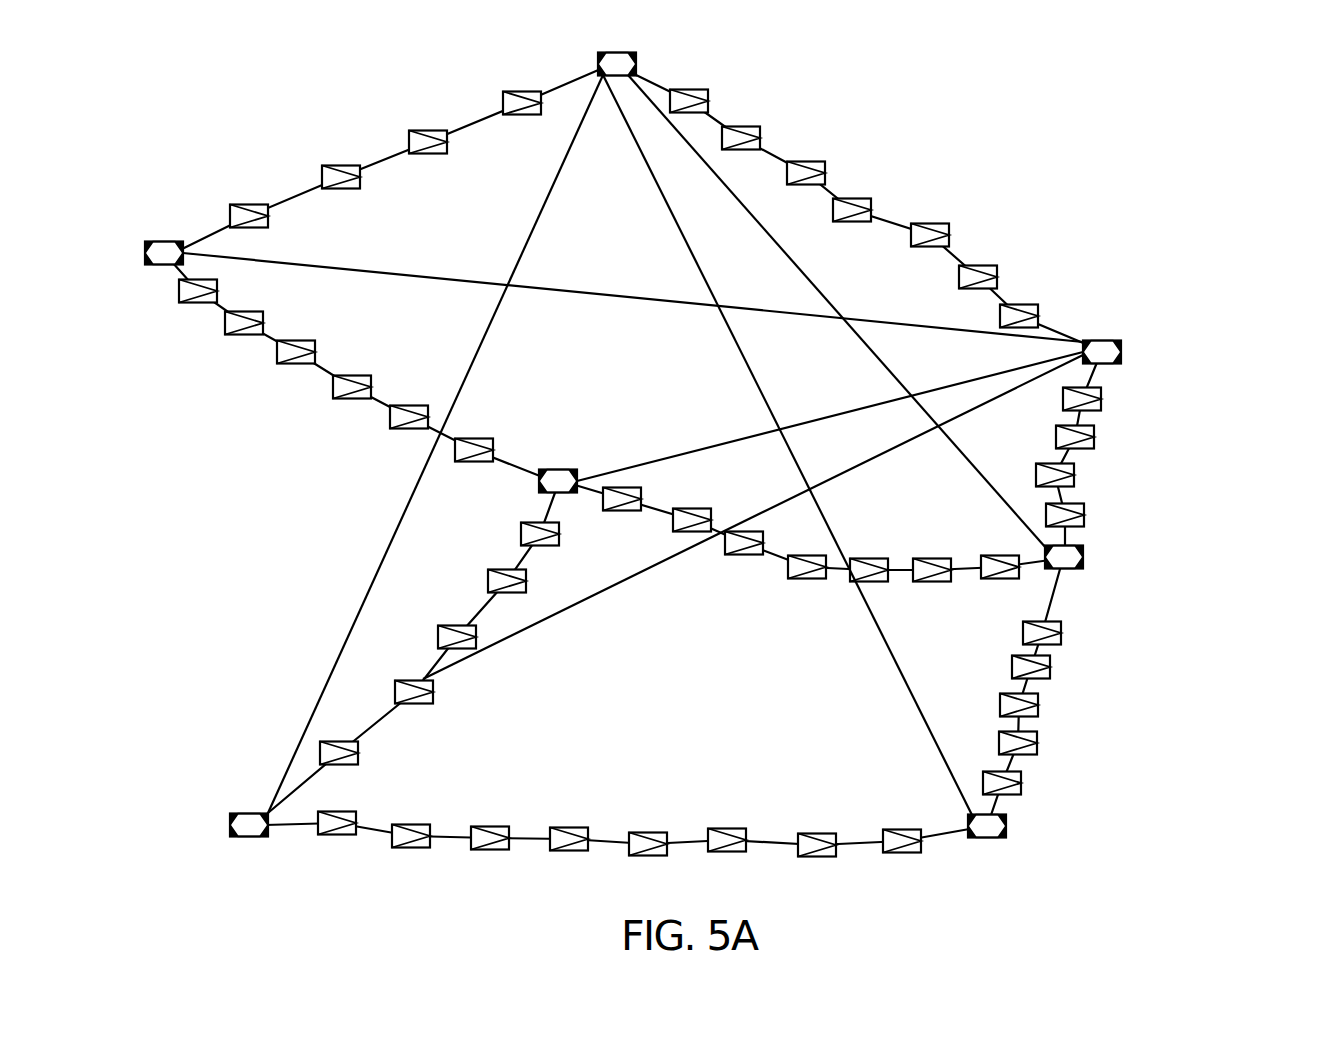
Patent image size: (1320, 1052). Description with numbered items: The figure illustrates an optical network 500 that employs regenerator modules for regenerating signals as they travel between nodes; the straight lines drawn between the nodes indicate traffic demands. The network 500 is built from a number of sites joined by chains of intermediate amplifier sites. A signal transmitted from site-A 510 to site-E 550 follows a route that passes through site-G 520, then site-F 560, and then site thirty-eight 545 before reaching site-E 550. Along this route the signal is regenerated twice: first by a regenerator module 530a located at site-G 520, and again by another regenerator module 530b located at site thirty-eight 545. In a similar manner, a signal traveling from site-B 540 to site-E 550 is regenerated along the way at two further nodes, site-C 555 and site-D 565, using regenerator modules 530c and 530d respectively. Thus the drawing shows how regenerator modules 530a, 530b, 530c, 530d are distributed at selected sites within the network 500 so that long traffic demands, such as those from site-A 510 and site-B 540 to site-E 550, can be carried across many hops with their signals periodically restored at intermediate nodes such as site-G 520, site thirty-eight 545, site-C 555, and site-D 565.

The optical network 500 is at (692, 481).
The site-A 510 is at (598, 64).
The site-G 520 is at (152, 266).
The regenerator module 530a is at (164, 242).
The regenerator module 530b is at (508, 650).
The regenerator module 530c is at (1092, 569).
The regenerator module 530d is at (1016, 833).
The site-B 540 is at (1122, 343).
The site-38 545 is at (478, 642).
The site-E 550 is at (236, 813).
The site-C 555 is at (1066, 569).
The site F node 560 is at (578, 472).
The site-D 565 is at (987, 838).